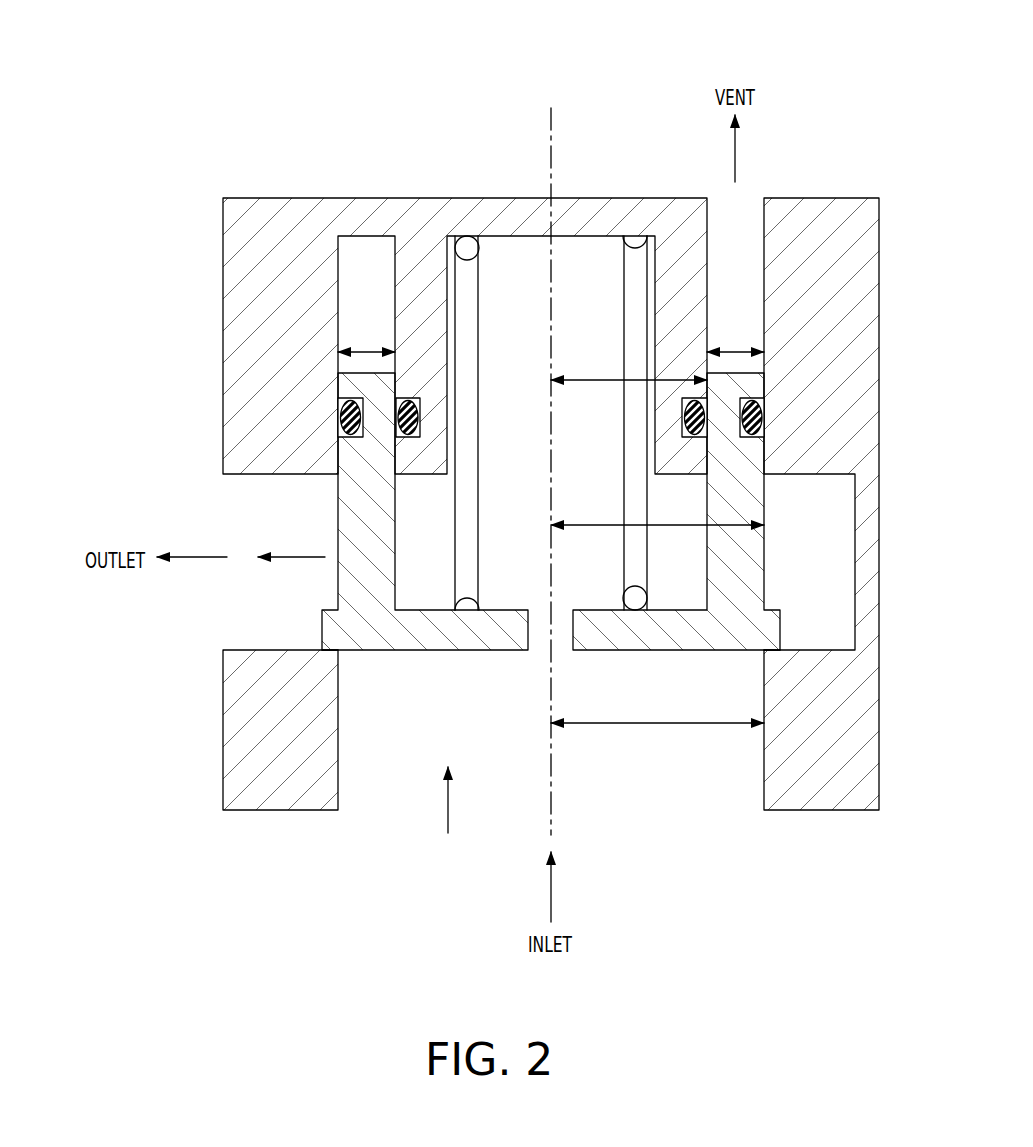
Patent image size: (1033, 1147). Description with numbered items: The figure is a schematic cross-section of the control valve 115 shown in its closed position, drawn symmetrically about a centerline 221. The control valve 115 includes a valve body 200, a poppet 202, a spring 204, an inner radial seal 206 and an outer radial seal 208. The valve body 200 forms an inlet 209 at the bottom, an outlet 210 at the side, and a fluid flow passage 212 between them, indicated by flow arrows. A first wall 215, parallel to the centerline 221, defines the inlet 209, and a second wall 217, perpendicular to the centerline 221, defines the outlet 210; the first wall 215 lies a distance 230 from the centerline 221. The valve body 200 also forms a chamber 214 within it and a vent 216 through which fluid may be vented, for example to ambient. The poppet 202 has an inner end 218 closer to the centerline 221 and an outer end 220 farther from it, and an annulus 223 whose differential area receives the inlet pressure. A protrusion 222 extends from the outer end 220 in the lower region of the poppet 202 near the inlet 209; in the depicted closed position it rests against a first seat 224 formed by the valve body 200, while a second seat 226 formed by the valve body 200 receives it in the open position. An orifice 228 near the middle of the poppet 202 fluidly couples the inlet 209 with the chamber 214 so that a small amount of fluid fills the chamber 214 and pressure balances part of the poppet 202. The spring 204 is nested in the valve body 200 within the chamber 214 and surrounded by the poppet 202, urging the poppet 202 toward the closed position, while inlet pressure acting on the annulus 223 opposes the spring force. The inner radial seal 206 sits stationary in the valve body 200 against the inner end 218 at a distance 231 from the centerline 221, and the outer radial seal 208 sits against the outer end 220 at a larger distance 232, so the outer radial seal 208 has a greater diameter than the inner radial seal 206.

The control valve 115 is at (337, 105).
The valve body 200 is at (243, 202).
The poppet 202 is at (472, 651).
The spring 204 is at (478, 301).
The inner radial seal 206 is at (410, 437).
The outer radial seal 208 is at (338, 412).
The inlet 209 is at (551, 730).
The outlet 210 is at (280, 562).
The fluid flow passage 212 is at (307, 557).
The chamber 214 is at (603, 423).
The first wall 215 is at (340, 740).
The vent 216 is at (748, 196).
The second wall 217 is at (228, 477).
The inner end 218 is at (398, 253).
The outer end 220 is at (338, 250).
The centerline 221 is at (553, 125).
The protrusion 222 is at (327, 632).
The annulus 223 is at (365, 350).
The first seat 224 is at (338, 650).
The second seat 226 is at (326, 476).
The orifice 228 is at (562, 652).
The distance 230 is at (663, 726).
The distance 231 is at (595, 378).
The distance 232 is at (586, 527).